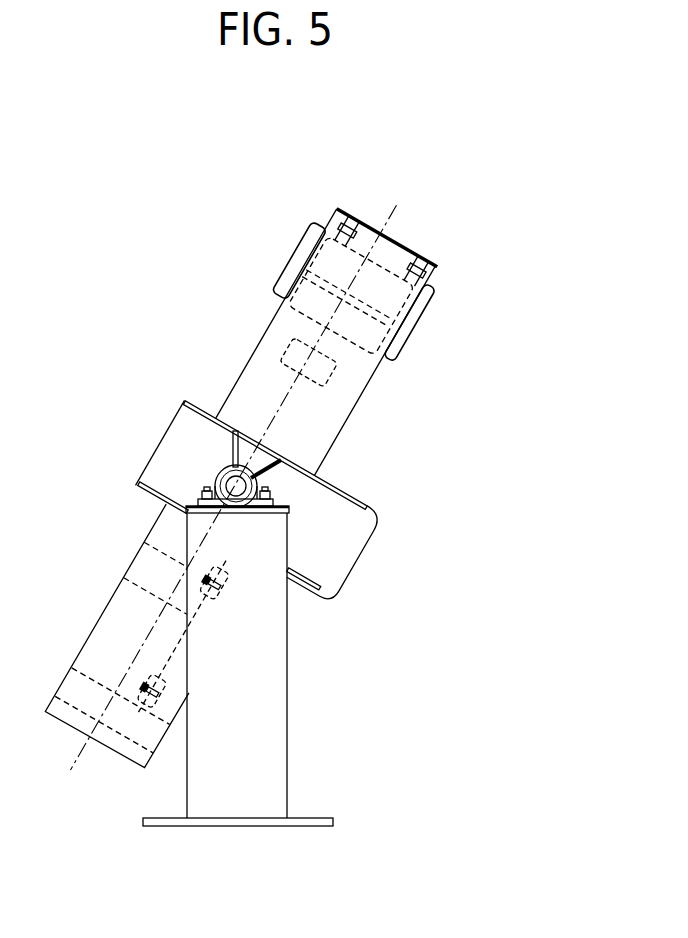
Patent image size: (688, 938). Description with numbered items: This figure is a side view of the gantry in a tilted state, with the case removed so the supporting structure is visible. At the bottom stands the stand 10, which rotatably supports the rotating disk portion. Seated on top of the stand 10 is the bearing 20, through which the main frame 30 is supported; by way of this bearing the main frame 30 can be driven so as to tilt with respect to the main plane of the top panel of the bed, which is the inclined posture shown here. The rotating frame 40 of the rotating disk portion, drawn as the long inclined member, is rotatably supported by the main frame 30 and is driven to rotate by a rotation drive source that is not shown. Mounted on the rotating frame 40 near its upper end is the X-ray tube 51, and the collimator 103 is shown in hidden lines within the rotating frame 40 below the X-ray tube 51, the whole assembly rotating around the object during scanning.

The stand 10 is at (283, 755).
The bearing 20 is at (215, 468).
The main frame 30 is at (362, 541).
The rotating frame 40 is at (257, 362).
The X-ray tube 51 is at (308, 250).
The collimator 103 is at (293, 343).